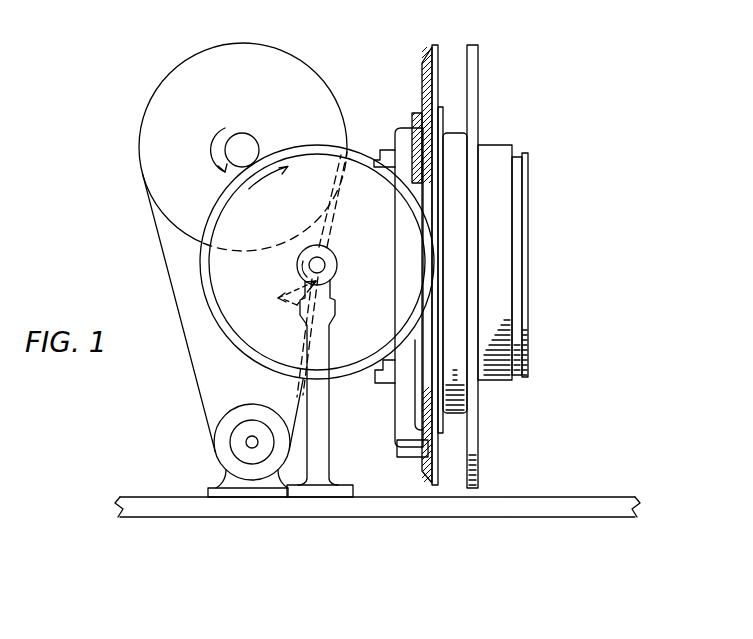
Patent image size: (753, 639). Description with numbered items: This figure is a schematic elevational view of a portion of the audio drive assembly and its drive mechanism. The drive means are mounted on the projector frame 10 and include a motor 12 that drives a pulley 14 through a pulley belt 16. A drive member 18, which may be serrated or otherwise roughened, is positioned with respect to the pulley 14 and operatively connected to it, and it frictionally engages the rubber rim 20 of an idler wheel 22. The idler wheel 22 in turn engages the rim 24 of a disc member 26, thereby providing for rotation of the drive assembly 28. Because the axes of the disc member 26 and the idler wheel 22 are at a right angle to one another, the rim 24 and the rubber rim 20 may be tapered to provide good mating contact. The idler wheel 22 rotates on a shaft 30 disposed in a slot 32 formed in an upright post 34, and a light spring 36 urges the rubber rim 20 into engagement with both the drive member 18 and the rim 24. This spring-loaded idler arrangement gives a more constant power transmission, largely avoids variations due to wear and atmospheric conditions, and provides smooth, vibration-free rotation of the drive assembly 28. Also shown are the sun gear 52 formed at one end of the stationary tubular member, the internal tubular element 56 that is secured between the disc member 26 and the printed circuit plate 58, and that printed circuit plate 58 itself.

The projector frame 10 is at (158, 507).
The motor 12 is at (220, 458).
The pulley 14 is at (153, 127).
The pulley belt 16 is at (185, 318).
The drive member 18 is at (237, 143).
The rubber rim 20 is at (205, 268).
The idler wheel 22 is at (356, 172).
The rim 24 is at (426, 56).
The disc member 26 is at (441, 68).
The drive assembly 28 is at (533, 137).
The shaft 30 is at (323, 257).
The slot 32 is at (334, 262).
The upright post 34 is at (329, 347).
The light spring 36 is at (279, 298).
The sun gear 52 is at (530, 166).
The internal tubular element 56 is at (452, 140).
The printed circuit plate 58 is at (478, 470).